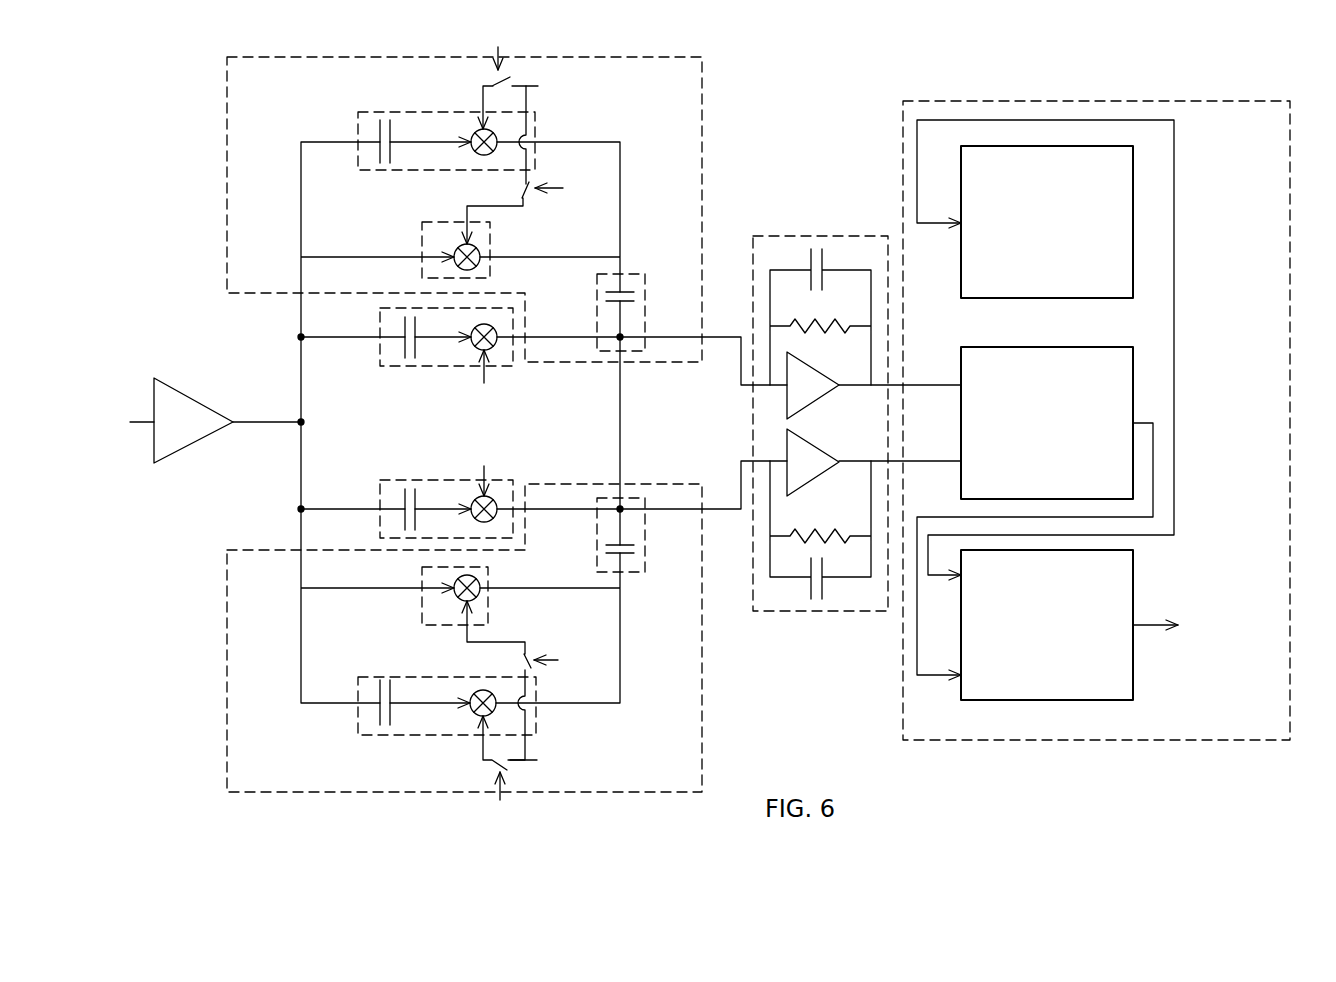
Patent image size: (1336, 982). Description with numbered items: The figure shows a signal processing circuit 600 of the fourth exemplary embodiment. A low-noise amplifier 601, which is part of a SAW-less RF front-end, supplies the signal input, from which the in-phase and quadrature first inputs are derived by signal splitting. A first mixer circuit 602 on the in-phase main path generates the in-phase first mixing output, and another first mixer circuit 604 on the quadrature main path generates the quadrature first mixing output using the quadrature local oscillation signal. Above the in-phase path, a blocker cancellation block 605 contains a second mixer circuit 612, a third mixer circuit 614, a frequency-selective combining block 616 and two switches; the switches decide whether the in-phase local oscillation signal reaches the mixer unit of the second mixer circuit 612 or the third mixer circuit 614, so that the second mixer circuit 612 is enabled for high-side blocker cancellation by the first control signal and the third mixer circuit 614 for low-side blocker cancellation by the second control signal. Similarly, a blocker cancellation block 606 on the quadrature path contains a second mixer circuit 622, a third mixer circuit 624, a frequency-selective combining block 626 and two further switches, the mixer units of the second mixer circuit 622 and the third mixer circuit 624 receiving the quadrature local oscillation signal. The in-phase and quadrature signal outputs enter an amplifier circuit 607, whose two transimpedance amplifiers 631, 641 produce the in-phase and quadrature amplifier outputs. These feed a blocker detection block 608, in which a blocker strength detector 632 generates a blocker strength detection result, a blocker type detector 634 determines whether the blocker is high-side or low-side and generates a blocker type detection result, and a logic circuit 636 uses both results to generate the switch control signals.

The signal processing circuit 600 is at (1122, 762).
The low-noise amplifier 601 is at (195, 402).
The first mixer circuit 602 is at (380, 357).
The first mixer circuit 604 is at (380, 480).
The blocker cancellation block 605 is at (227, 118).
The blocker cancellation block 606 is at (227, 728).
The amplifier circuit 607 is at (812, 236).
The blocker detection block 608 is at (1067, 101).
The second mixer circuit 612 is at (456, 222).
The third mixer circuit 614 is at (358, 118).
The frequency-selective combining block 616 is at (645, 282).
The second mixer circuit 622 is at (453, 628).
The third mixer circuit 624 is at (358, 728).
The frequency-selective combining block 626 is at (645, 562).
The transimpedance amplifier 631 is at (810, 401).
The blocker strength detector 632 is at (1003, 298).
The blocker type detector 634 is at (1068, 346).
The logic circuit 636 is at (1003, 700).
The transimpedance amplifier 641 is at (810, 478).